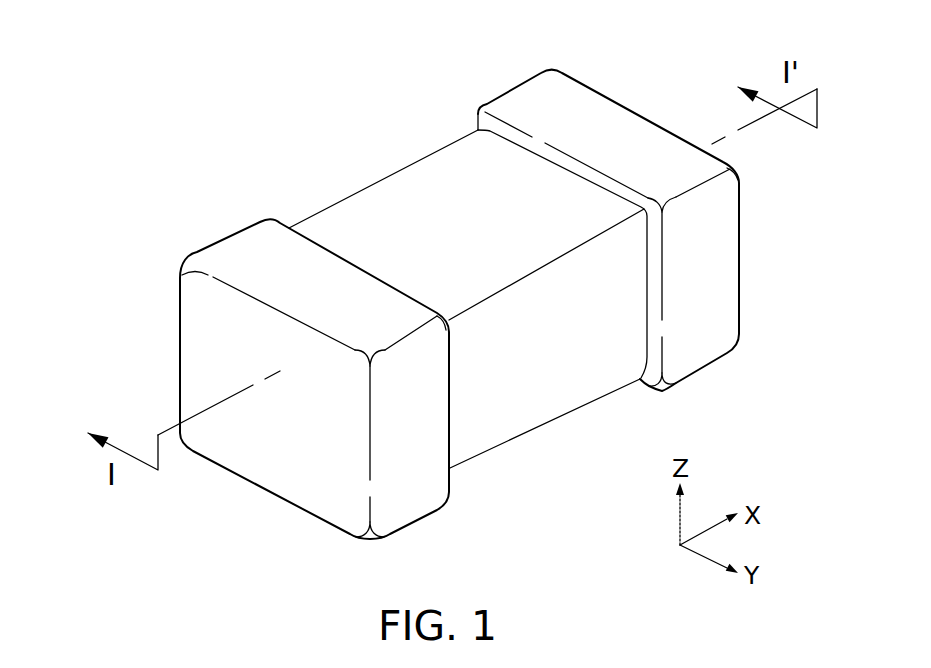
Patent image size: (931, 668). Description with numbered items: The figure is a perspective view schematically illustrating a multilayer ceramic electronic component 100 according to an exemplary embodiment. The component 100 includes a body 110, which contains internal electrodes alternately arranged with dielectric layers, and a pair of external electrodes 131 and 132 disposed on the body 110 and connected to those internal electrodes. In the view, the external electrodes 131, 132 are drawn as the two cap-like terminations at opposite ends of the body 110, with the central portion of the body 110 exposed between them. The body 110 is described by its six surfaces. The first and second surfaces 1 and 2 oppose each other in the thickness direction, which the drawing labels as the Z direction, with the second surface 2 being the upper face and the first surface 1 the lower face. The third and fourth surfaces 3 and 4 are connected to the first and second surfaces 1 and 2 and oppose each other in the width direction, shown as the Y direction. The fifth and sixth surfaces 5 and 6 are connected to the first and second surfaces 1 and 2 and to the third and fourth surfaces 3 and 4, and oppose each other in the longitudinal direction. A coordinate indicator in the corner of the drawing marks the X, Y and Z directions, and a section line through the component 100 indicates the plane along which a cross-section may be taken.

The multilayer ceramic electronic component 100 is at (243, 80).
The body 110 is at (462, 282).
The external electrode 131 is at (314, 353).
The external electrode 132 is at (641, 205).
The first surface 1 is at (504, 392).
The second surface 2 is at (477, 185).
The third surface 3 is at (284, 434).
The fourth surface 4 is at (684, 243).
The fifth surface 5 is at (566, 362).
The sixth surface 6 is at (418, 208).